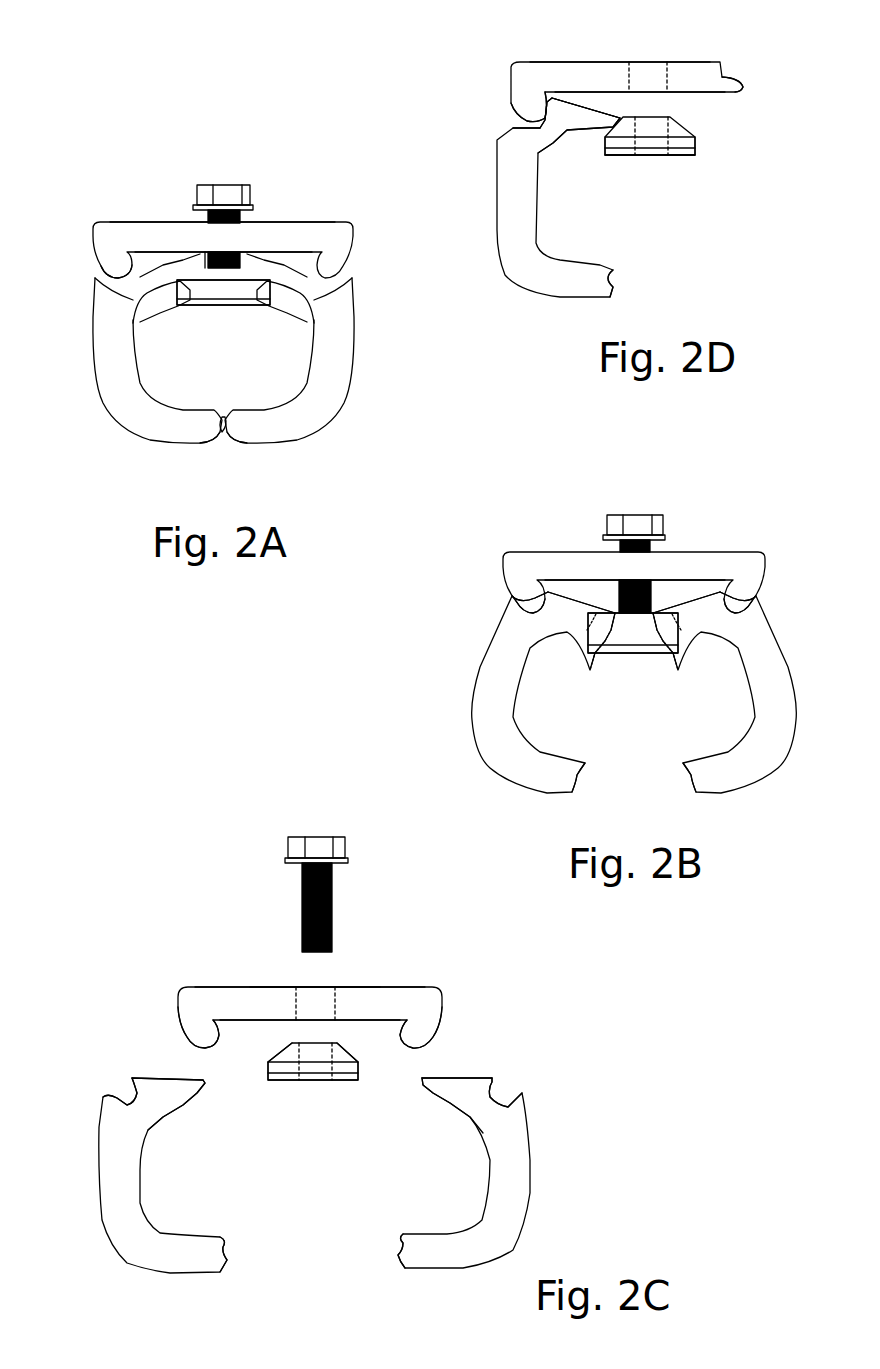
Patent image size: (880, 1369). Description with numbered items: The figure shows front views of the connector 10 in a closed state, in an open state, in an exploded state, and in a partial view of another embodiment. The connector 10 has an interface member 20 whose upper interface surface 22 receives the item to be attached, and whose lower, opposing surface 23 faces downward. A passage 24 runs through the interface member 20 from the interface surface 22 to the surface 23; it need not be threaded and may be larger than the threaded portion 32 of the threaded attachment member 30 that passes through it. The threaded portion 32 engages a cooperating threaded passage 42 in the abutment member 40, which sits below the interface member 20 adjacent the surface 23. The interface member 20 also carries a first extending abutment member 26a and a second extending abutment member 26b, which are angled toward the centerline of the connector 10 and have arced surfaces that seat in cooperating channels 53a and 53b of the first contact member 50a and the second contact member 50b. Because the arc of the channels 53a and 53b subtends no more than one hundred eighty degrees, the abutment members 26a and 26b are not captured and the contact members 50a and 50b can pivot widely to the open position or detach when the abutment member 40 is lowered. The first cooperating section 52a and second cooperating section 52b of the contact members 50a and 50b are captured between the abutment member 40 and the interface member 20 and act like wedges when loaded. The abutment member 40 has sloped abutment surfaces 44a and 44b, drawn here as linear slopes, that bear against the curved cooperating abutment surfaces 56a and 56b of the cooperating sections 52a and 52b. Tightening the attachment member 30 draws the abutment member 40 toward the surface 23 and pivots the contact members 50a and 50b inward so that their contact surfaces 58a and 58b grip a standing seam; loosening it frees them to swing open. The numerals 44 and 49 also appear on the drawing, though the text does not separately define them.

In FIG. 2A, the connector 10 is at (217, 143).
In FIG. 2B, the connector 10 is at (725, 472).
In FIG. 2C, the connector 10 is at (165, 868).
In FIG. 2A, the interface member 20 is at (358, 217).
In FIG. 2D, the interface member 20 is at (518, 72).
In FIG. 2B, the interface member 20 is at (765, 550).
In FIG. 2C, the interface member 20 is at (402, 975).
In FIG. 2A, the interface surface 22 is at (125, 219).
In FIG. 2D, the interface surface 22 is at (578, 58).
In FIG. 2C, the interface surface 22 is at (348, 985).
In FIG. 2A, the lower, opposing surface 23 is at (157, 293).
In FIG. 2D, the lower, opposing surface 23 is at (710, 93).
In FIG. 2B, the lower, opposing surface 23 is at (567, 577).
In FIG. 2C, the lower, opposing surface 23 is at (267, 1018).
In FIG. 2D, the passage 24 is at (670, 80).
In FIG. 2C, the passage 24 is at (287, 998).
In FIG. 2A, the first extending abutment member 26a is at (97, 250).
In FIG. 2D, the first extending abutment member 26a is at (538, 110).
In FIG. 2B, the first extending abutment member 26a is at (517, 587).
In FIG. 2C, the first extending abutment member 26a is at (202, 1048).
In FIG. 2B, the second extending abutment member 26b is at (750, 587).
In FIG. 2C, the second extending abutment member 26b is at (425, 1043).
In FIG. 2A, the threaded attachment member 30 is at (253, 184).
In FIG. 2B, the threaded attachment member 30 is at (667, 517).
In FIG. 2C, the threaded attachment member 30 is at (283, 862).
In FIG. 2A, the threaded portion 32 is at (253, 245).
In FIG. 2B, the threaded portion 32 is at (620, 610).
In FIG. 2C, the threaded portion 32 is at (342, 900).
In FIG. 2D, the abutment member 40 is at (687, 167).
In FIG. 2C, the abutment member 40 is at (313, 1088).
In FIG. 2A, the cooperating threaded passage 42 is at (223, 292).
In FIG. 2D, the cooperating threaded passage 42 is at (652, 142).
In FIG. 2B, the cooperating threaded passage 42 is at (633, 633).
In FIG. 2C, the cooperating threaded passage 42 is at (325, 1048).
In FIG. 2A, the nut flange 44 is at (200, 262).
In FIG. 2D, the nut flange 44 is at (687, 117).
In FIG. 2B, the nut flange 44 is at (665, 645).
In FIG. 2C, the sloped abutment surface 44a is at (282, 1053).
In FIG. 2C, the sloped abutment surface 44b is at (350, 1042).
In FIG. 2A, the bore 49 is at (203, 256).
In FIG. 2A, the first contact member 50a is at (97, 330).
In FIG. 2D, the first contact member 50a is at (495, 238).
In FIG. 2B, the first contact member 50a is at (473, 678).
In FIG. 2C, the first contact member 50a is at (88, 1180).
In FIG. 2A, the second contact member 50b is at (350, 323).
In FIG. 2B, the second contact member 50b is at (767, 780).
In FIG. 2C, the second contact member 50b is at (538, 1142).
In FIG. 2A, the first cooperating section 52a is at (148, 265).
In FIG. 2D, the first cooperating section 52a is at (580, 120).
In FIG. 2B, the first cooperating section 52a is at (553, 580).
In FIG. 2C, the first cooperating section 52a is at (158, 1092).
In FIG. 2A, the second cooperating section 52b is at (293, 258).
In FIG. 2B, the second cooperating section 52b is at (737, 557).
In FIG. 2C, the second cooperating section 52b is at (455, 1088).
In FIG. 2A, the channel 53a is at (100, 293).
In FIG. 2D, the channel 53a is at (540, 138).
In FIG. 2B, the channel 53a is at (507, 613).
In FIG. 2C, the channel 53a is at (127, 1090).
In FIG. 2A, the channel 53b is at (347, 293).
In FIG. 2B, the channel 53b is at (743, 607).
In FIG. 2C, the channel 53b is at (502, 1093).
In FIG. 2A, the cooperating abutment surface 56a is at (182, 275).
In FIG. 2D, the cooperating abutment surface 56a is at (613, 127).
In FIG. 2B, the cooperating abutment surface 56a is at (570, 577).
In FIG. 2C, the cooperating abutment surface 56a is at (195, 1113).
In FIG. 2A, the cooperating abutment surface 56b is at (265, 270).
In FIG. 2B, the cooperating abutment surface 56b is at (657, 610).
In FIG. 2C, the cooperating abutment surface 56b is at (428, 1105).
In FIG. 2A, the contact surface 58a is at (208, 428).
In FIG. 2D, the contact surface 58a is at (620, 285).
In FIG. 2B, the contact surface 58a is at (587, 780).
In FIG. 2C, the contact surface 58a is at (233, 1253).
In FIG. 2A, the contact surface 58b is at (268, 442).
In FIG. 2B, the contact surface 58b is at (677, 790).
In FIG. 2C, the contact surface 58b is at (397, 1253).